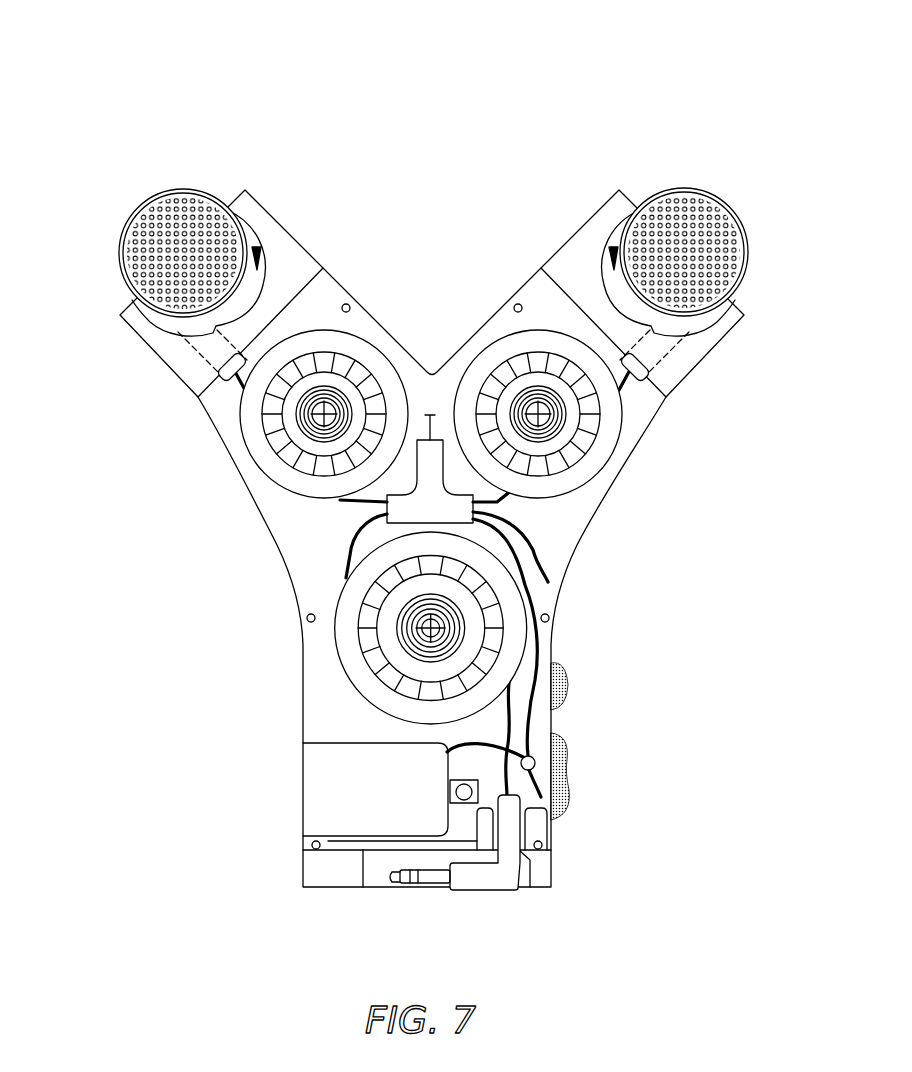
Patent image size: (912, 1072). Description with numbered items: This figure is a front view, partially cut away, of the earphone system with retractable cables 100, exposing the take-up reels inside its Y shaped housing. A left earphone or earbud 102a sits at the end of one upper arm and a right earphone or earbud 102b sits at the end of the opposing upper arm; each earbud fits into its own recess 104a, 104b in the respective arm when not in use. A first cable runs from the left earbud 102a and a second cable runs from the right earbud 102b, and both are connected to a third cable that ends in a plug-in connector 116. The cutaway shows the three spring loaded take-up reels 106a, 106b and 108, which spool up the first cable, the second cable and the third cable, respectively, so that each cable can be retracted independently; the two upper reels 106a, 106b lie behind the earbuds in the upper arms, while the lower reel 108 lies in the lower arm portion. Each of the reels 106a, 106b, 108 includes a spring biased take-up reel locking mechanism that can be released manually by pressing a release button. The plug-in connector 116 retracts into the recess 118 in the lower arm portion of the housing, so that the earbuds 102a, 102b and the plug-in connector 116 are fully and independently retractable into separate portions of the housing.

The earphone system with retractable cables 100 is at (116, 64).
The left earphone or earbud 102a is at (133, 200).
The right earphone or earbud 102b is at (730, 200).
The recess 104a is at (257, 250).
The recess 104b is at (613, 247).
The spring loaded take-up reel 106a is at (383, 347).
The spring loaded take-up reel 106b is at (480, 350).
The spring loaded take-up reel 108 is at (348, 678).
The plug-in connector 116 is at (481, 892).
The recess 118 is at (363, 886).